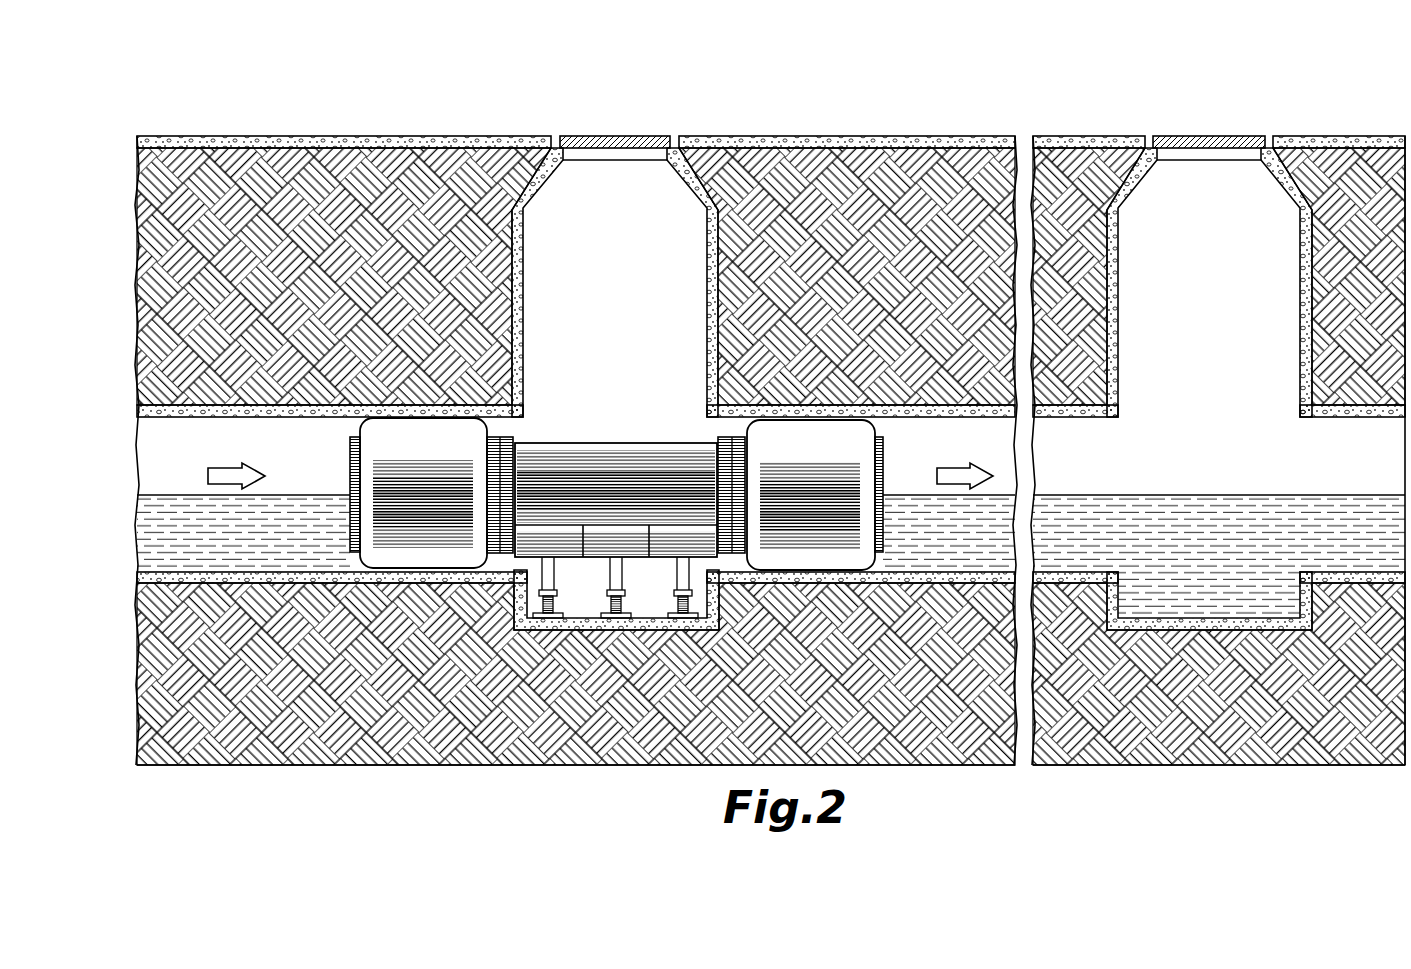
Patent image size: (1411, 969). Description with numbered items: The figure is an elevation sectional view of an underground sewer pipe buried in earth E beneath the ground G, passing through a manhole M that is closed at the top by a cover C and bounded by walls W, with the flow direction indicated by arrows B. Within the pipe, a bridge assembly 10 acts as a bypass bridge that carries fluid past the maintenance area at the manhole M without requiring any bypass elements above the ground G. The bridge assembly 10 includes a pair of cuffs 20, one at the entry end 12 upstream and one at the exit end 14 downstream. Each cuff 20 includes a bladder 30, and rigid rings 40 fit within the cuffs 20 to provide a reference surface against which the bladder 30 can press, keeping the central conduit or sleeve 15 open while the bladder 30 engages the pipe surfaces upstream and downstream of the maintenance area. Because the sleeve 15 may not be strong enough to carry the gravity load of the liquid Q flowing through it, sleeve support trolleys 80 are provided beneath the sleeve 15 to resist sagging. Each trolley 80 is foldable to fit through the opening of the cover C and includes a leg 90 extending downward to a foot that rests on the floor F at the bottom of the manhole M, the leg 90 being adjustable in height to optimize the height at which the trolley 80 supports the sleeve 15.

The bridge assembly 10 is at (607, 513).
The entry end 12 is at (348, 453).
The exit end 14 is at (885, 452).
The central conduit/sleeve 15 is at (583, 445).
The cuff 20 is at (617, 456).
The bladder 30 is at (407, 452).
The rigid ring 40 is at (493, 560).
The sleeve support trolley 80 is at (637, 595).
The leg 90 is at (612, 580).
The ground G is at (400, 136).
The cover C is at (612, 136).
The earth E is at (334, 283).
The manhole wall W is at (523, 305).
The manhole M is at (604, 283).
The flow direction B is at (233, 470).
The liquid Q is at (1122, 510).
The floor F is at (620, 623).